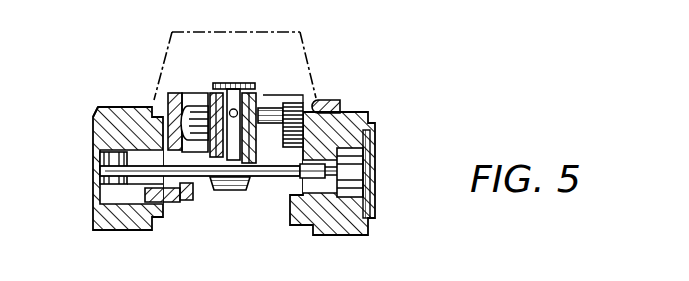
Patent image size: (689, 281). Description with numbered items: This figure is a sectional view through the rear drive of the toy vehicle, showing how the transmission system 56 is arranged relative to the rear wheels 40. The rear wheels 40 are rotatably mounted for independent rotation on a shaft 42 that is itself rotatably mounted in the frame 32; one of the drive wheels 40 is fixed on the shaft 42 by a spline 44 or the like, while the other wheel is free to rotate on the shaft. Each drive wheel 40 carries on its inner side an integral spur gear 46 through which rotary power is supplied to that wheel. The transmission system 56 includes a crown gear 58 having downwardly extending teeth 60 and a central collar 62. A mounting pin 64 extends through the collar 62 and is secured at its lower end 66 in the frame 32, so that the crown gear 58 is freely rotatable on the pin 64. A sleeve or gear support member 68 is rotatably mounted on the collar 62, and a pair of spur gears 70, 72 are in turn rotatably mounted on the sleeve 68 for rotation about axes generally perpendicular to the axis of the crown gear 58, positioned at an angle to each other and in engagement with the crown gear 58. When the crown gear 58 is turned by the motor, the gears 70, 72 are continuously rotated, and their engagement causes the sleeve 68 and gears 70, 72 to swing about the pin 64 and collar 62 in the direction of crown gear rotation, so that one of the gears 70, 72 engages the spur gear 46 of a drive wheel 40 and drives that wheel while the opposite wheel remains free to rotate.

The frame 32 is at (192, 202).
The rear wheels 40 is at (375, 132).
The shaft 42 is at (120, 172).
The spline 44 is at (375, 168).
The spur gear 46 is at (162, 107).
The transmission system 56 is at (300, 85).
The crown gear 58 is at (300, 70).
The teeth 60 is at (168, 95).
The central collar 62 is at (262, 176).
The mounting pin 64 is at (243, 83).
The lower end 66 is at (232, 190).
The sleeve 68 is at (210, 178).
The spur gear 70 is at (314, 106).
The spur gear 72 is at (196, 97).